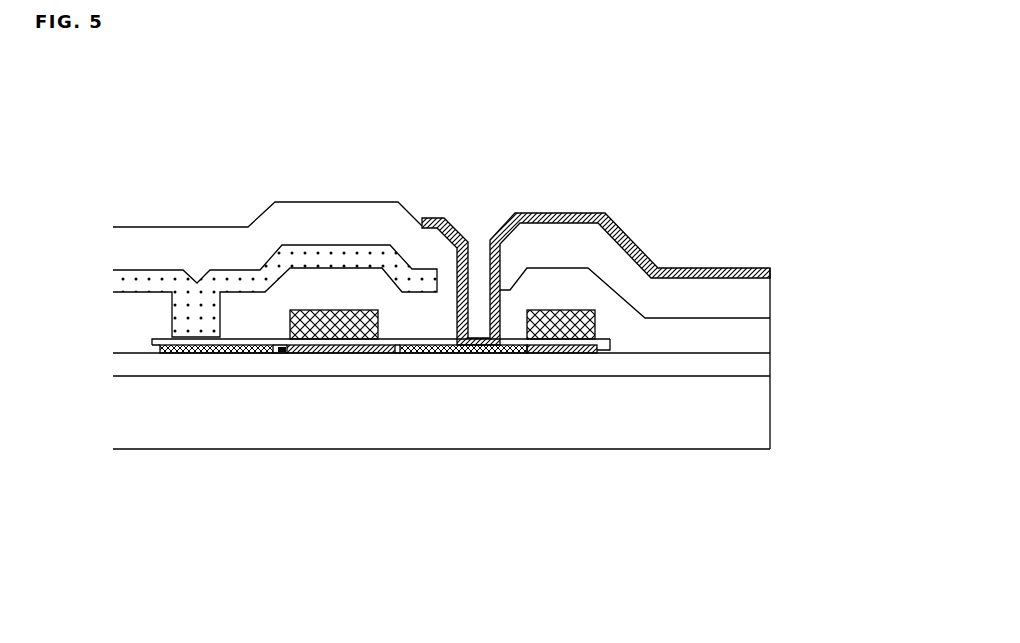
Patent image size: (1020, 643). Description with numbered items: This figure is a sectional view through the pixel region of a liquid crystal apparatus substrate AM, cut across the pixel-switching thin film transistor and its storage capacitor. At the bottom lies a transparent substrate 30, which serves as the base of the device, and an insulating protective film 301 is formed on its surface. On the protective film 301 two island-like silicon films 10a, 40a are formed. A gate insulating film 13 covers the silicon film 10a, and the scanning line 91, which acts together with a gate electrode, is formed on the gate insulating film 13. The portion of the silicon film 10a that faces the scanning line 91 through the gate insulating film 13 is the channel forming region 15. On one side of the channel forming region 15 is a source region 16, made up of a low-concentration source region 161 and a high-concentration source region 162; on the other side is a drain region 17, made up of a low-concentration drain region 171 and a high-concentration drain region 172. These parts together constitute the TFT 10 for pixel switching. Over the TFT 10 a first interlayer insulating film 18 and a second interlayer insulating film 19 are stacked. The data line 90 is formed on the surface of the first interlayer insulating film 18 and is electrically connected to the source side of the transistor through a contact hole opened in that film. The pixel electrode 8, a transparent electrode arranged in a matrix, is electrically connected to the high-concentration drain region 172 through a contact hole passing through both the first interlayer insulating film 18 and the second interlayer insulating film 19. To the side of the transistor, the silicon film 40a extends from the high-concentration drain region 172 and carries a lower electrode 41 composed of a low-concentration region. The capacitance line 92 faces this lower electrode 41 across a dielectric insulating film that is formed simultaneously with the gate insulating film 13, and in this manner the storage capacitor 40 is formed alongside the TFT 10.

The active matrix substrate AM is at (741, 151).
The pixel electrode 8 is at (703, 268).
The TFT 10 is at (373, 474).
The silicon film 10a is at (328, 352).
The gate insulating film 13 is at (611, 342).
The channel forming region 15 is at (348, 354).
The source region 16 is at (295, 474).
The low-concentration source region 161 is at (283, 352).
The high-concentration source region 162 is at (225, 352).
The drain region 17 is at (491, 452).
The low-concentration drain region 171 is at (397, 352).
The high-concentration drain region 172 is at (443, 352).
The first interlayer insulating film 18 is at (581, 244).
The second interlayer insulating film 19 is at (604, 210).
The transparent substrate 30 is at (753, 407).
The insulating protective film 301 is at (753, 367).
The storage capacitor 40 is at (579, 382).
The silicon film 40a is at (547, 354).
The lower electrode 41 is at (597, 352).
The data line 90 is at (218, 296).
The scanning line 91 is at (335, 310).
The capacitance line 92 is at (551, 310).